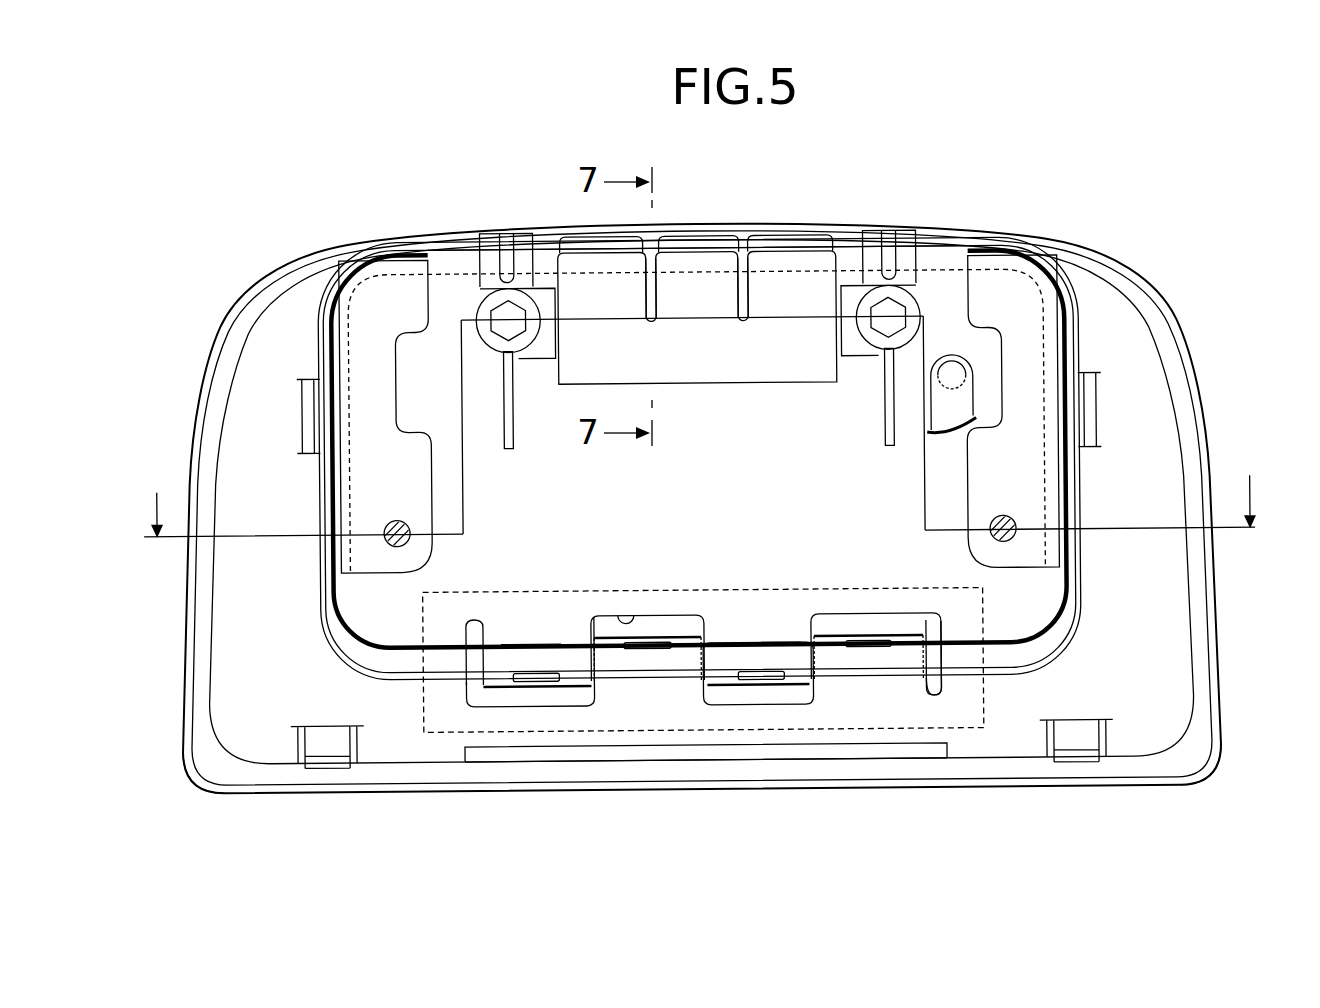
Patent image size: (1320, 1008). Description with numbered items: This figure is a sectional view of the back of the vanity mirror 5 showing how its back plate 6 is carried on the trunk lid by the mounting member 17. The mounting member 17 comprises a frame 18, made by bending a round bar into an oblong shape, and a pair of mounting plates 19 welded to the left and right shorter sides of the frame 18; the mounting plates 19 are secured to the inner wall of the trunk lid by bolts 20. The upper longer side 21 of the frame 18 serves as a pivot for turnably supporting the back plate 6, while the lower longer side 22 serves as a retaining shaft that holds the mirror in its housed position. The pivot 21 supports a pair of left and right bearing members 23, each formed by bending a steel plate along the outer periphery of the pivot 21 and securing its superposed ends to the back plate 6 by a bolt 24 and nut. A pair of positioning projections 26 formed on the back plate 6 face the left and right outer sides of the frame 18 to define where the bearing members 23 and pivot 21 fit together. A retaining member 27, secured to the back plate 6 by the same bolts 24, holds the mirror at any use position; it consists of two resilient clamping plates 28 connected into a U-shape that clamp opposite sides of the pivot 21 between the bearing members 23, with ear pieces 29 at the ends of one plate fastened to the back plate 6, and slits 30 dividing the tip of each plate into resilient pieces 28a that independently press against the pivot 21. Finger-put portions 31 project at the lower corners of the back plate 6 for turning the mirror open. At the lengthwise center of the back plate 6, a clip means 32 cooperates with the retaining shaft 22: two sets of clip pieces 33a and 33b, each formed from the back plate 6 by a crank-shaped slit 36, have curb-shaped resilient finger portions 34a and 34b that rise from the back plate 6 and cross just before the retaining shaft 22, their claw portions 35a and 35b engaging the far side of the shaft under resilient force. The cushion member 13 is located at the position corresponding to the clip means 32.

The vanity mirror 5 is at (1106, 232).
The back plate 6 is at (1178, 275).
The cushion member 13 is at (553, 718).
The mounting member 17 is at (1072, 643).
The frame 18 is at (1078, 590).
The mounting plate 19 is at (420, 493).
The bolt 20 is at (405, 545).
The upper longer side (pivot) 21 is at (938, 247).
The lower longer side (retaining shaft) 22 is at (950, 660).
The bearing member 23 is at (523, 250).
The bolt 24 is at (508, 318).
The positioning projection 26 is at (305, 405).
The retaining member 27 is at (725, 386).
The resilient clamping plate 28 is at (718, 236).
The resilient piece 28a is at (598, 262).
The ear piece 29 is at (530, 340).
The slit 30 is at (648, 312).
The finger-put portion 31 is at (212, 772).
The clip means 32 is at (662, 594).
The clip piece 33a is at (521, 697).
The clip piece 33b is at (671, 630).
The resilient finger portion 34a is at (510, 625).
The resilient finger portion 34b is at (621, 682).
The claw portion 35a is at (538, 672).
The claw portion 35b is at (642, 650).
The crank-shaped slit 36 is at (626, 612).